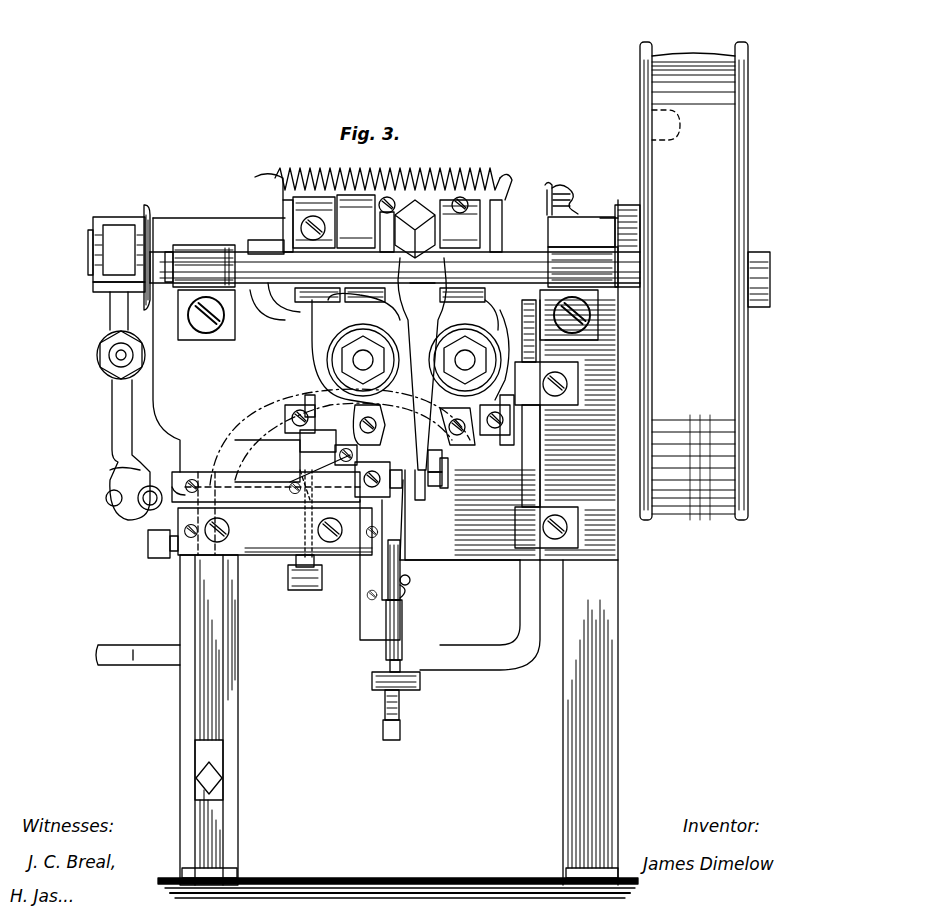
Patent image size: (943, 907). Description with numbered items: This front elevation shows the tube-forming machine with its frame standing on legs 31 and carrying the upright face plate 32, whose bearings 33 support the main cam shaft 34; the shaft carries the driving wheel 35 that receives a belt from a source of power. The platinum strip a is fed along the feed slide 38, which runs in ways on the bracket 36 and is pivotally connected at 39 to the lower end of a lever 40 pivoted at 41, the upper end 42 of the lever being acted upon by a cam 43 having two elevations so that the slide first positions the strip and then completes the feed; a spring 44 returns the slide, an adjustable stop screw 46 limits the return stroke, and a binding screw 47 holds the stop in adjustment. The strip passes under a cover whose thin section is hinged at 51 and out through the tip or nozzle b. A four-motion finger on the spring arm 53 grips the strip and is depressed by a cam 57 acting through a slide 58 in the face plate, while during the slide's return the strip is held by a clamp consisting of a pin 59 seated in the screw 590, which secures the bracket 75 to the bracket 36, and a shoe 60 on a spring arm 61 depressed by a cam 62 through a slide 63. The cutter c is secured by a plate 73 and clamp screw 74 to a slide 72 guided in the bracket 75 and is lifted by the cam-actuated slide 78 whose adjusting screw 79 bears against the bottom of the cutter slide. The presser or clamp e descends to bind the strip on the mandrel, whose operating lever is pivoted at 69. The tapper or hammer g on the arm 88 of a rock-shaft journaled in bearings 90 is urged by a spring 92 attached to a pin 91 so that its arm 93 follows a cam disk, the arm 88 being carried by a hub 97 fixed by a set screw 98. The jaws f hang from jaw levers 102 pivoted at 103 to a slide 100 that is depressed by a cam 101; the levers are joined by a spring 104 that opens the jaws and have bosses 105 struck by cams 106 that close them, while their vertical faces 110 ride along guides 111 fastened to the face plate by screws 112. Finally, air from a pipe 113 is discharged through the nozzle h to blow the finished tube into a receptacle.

The legs 31 is at (636, 662).
The upright or face plate 32 is at (385, 542).
The bearings 33 is at (180, 225).
The main or cam shaft 34 is at (770, 270).
The driving wheel 35 is at (705, 225).
The bracket 36 is at (278, 531).
The feed slide 38 is at (178, 480).
The pivotal connection 39 is at (112, 505).
The lever 40 is at (110, 425).
The pivot 41 is at (112, 357).
The upper end of lever 42 is at (116, 254).
The cam 43 is at (148, 215).
The spring 44 is at (148, 508).
The screw 46 is at (152, 553).
The binding screw 47 is at (190, 555).
The hinge 51 is at (192, 480).
The spring arm 53 is at (383, 462).
The cam 57 is at (356, 221).
The slide 58 is at (330, 345).
The pin or base member 59 is at (295, 478).
The screw 590 is at (305, 585).
The shoe 60 is at (351, 511).
The spring arm 61 is at (290, 438).
The cam 62 is at (312, 200).
The slide 63 is at (310, 300).
The pivot 69 is at (258, 262).
The slide 72 is at (402, 628).
The plate 73 is at (408, 590).
The clamp screw 74 is at (408, 580).
The bracket 75 is at (365, 580).
The cam-actuated slide 78 is at (500, 660).
The adjusting screw 79 is at (402, 710).
The arm 88 is at (418, 498).
The bearings 90 is at (198, 252).
The pin 91 is at (565, 188).
The spring 92 is at (575, 190).
The arm 93 is at (650, 126).
The hub or sleeve 97 is at (428, 361).
The set screw 98 is at (415, 229).
The slide 100 is at (410, 349).
The cam 101 is at (397, 198).
The jaw levers 102 is at (338, 300).
The pivots 103 is at (360, 362).
The spring 104 is at (420, 200).
The bosses 105 is at (288, 235).
The cams 106 is at (283, 200).
The vertical faces 110 is at (498, 412).
The guides 111 is at (505, 445).
The screws 112 is at (510, 420).
The pipe 113 is at (155, 648).
The strip of platinum a is at (65, 474).
The tip or nozzle b is at (424, 478).
The cutter c is at (412, 490).
The presser or clamp e is at (440, 452).
The jaws f is at (443, 472).
The tapper or hammer g is at (440, 482).
The nozzle h is at (255, 406).